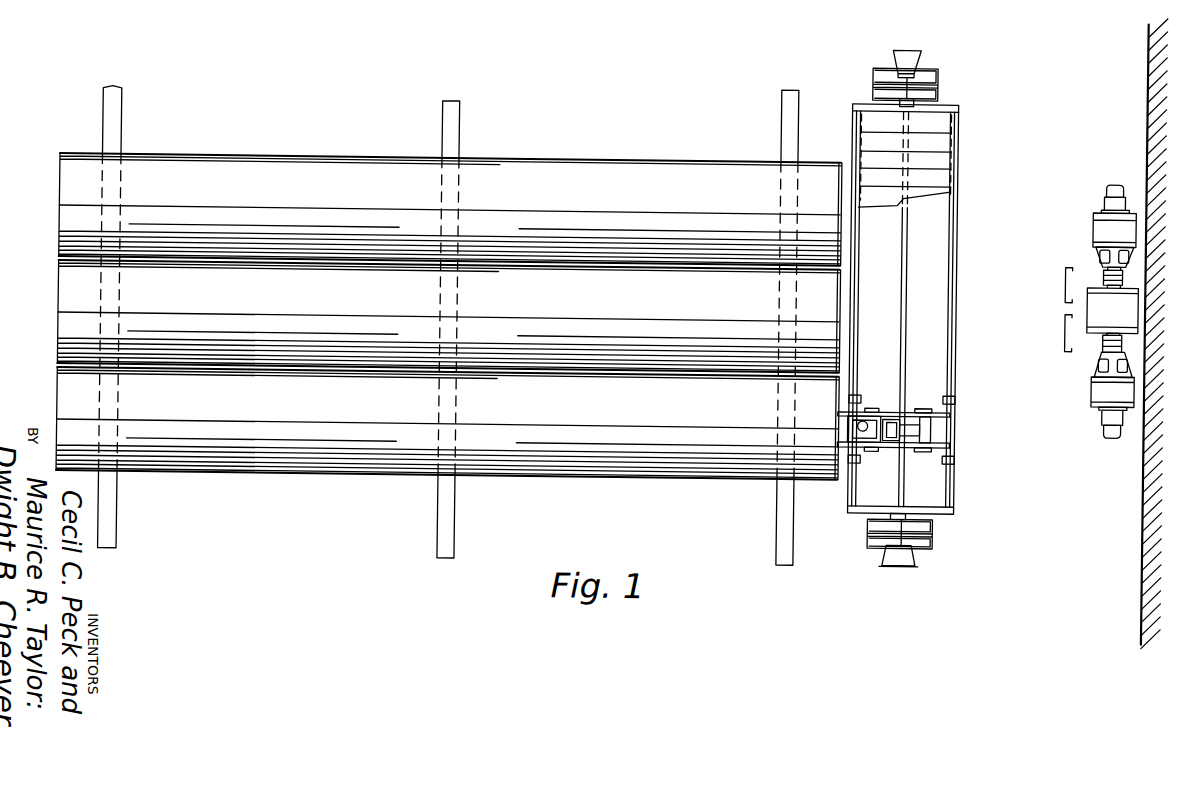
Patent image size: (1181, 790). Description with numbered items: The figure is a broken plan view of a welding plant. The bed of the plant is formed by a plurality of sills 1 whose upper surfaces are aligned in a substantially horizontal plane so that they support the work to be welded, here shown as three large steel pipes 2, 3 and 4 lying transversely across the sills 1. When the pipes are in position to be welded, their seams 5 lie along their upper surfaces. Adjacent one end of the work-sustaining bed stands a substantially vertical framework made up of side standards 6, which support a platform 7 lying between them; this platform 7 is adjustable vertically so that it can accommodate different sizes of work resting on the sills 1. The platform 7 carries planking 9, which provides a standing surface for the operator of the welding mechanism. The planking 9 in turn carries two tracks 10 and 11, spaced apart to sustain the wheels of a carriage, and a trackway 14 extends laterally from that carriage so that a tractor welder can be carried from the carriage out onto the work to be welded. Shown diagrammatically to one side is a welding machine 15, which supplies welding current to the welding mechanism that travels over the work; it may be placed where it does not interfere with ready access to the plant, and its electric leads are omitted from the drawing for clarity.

The sills 1 is at (110, 506).
The steel pipe 2 is at (276, 446).
The steel pipe 3 is at (66, 327).
The steel pipe 4 is at (67, 222).
The seams 5 is at (62, 205).
The side standards 6 is at (916, 68).
The platform 7 is at (928, 272).
The planking 9 is at (946, 134).
The track 10 is at (957, 219).
The track 11 is at (858, 261).
The trackway 14 is at (893, 402).
The welding machine 15 is at (1104, 307).